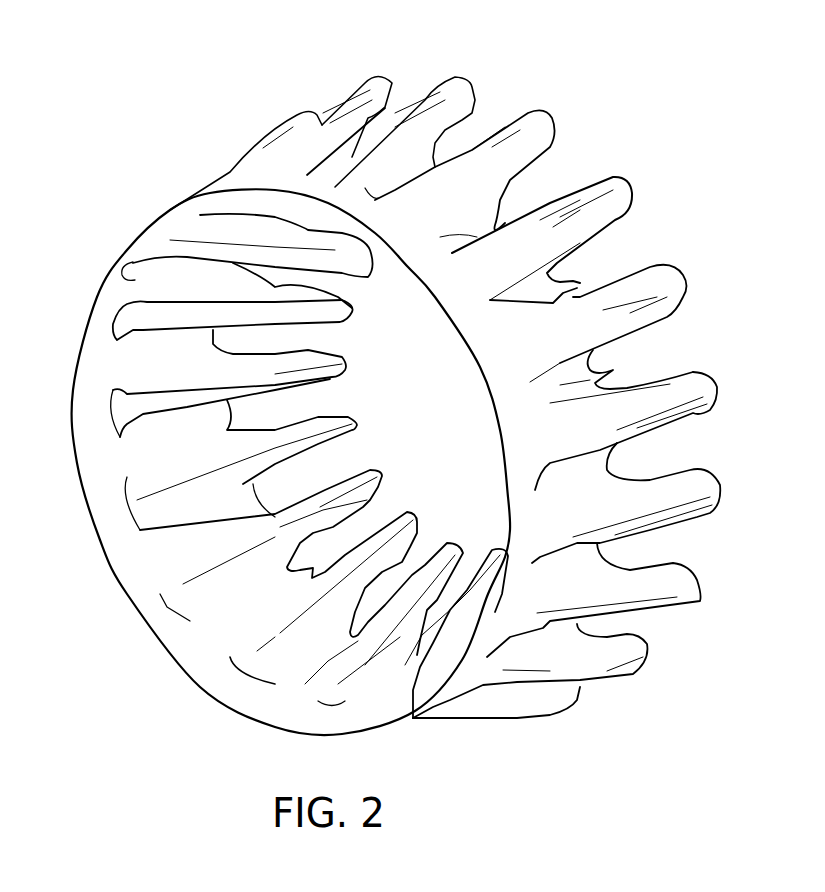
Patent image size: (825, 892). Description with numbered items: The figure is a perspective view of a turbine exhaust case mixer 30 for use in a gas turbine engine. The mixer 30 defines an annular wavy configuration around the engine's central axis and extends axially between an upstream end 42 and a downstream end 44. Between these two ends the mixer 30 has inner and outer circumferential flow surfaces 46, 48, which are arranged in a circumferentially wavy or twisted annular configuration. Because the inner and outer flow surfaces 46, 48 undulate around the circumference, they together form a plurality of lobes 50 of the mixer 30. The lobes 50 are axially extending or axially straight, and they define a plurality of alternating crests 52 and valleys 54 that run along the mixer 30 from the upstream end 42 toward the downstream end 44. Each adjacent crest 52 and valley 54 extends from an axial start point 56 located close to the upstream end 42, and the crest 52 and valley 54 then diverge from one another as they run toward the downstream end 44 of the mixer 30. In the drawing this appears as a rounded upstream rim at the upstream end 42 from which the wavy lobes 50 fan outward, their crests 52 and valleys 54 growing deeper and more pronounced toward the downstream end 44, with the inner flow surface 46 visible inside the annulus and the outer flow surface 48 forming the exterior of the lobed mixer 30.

The mixer 30 is at (145, 142).
The upstream end 42 is at (78, 337).
The downstream end 44 is at (557, 123).
The inner circumferential flow surface 46 is at (318, 430).
The outer circumferential flow surface 48 is at (370, 97).
The lobes 50 is at (653, 490).
The crests 52 is at (660, 287).
The valleys 54 is at (593, 350).
The axial start point 56 is at (365, 188).